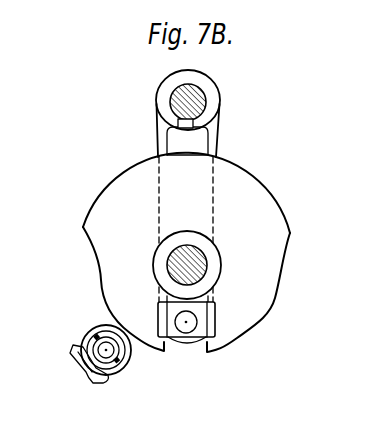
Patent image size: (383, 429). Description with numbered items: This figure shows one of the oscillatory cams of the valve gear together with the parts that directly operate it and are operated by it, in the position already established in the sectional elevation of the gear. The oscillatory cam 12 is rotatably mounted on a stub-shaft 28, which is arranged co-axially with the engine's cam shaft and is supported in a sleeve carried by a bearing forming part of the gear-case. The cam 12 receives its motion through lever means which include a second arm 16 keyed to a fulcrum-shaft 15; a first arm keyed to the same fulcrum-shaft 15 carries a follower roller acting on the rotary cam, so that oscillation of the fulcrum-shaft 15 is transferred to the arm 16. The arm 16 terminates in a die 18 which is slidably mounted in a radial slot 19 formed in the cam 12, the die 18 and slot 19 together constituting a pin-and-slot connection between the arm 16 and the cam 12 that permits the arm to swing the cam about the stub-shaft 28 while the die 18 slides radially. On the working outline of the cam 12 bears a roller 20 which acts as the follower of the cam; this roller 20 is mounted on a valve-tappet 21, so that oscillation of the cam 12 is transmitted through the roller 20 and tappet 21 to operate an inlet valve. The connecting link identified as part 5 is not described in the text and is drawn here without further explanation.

The connecting link 5 is at (188, 191).
The oscillatory cam 12 is at (255, 222).
The fulcrum-shaft 15 is at (170, 98).
The second arm 16 is at (175, 140).
The die 18 is at (213, 322).
The radial slot 19 is at (202, 345).
The roller 20 is at (99, 326).
The valve-tappet 21 is at (77, 348).
The stub-shaft 28 is at (172, 253).